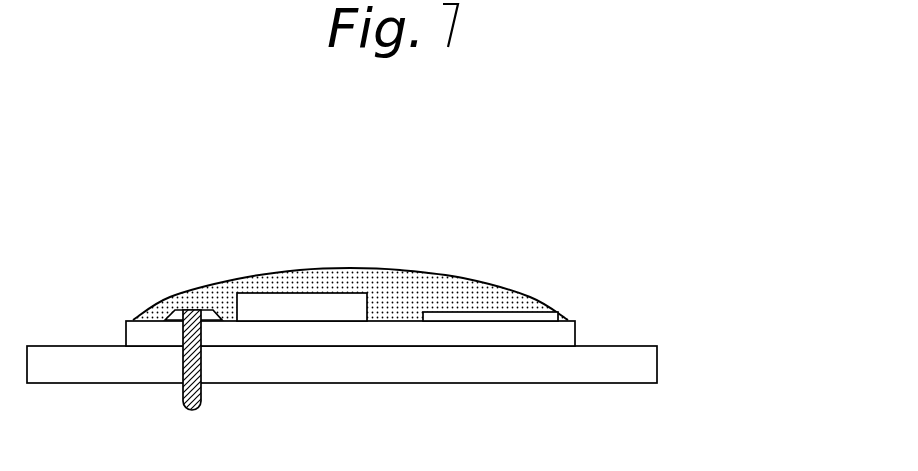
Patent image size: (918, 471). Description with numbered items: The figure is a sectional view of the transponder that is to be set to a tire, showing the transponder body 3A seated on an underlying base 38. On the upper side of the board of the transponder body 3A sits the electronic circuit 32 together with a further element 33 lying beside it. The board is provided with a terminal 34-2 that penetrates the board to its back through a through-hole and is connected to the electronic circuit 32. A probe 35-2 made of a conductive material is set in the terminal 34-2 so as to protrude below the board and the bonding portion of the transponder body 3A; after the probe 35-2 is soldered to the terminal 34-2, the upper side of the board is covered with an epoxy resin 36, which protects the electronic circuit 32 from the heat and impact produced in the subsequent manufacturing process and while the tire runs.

The electronic circuit 32 is at (265, 303).
The light receiving element 33 is at (520, 313).
The terminal 34-2 is at (170, 295).
The probe 35-2 is at (357, 413).
The epoxy resin 36 is at (463, 278).
The transponder body 3A is at (557, 333).
The substrate 38 is at (623, 365).